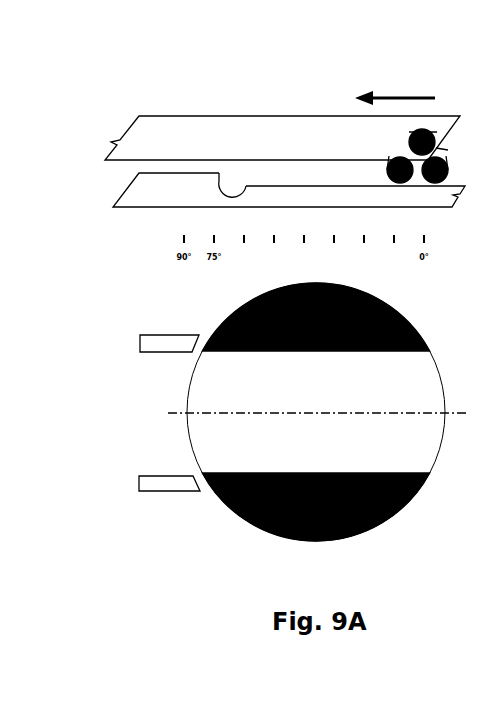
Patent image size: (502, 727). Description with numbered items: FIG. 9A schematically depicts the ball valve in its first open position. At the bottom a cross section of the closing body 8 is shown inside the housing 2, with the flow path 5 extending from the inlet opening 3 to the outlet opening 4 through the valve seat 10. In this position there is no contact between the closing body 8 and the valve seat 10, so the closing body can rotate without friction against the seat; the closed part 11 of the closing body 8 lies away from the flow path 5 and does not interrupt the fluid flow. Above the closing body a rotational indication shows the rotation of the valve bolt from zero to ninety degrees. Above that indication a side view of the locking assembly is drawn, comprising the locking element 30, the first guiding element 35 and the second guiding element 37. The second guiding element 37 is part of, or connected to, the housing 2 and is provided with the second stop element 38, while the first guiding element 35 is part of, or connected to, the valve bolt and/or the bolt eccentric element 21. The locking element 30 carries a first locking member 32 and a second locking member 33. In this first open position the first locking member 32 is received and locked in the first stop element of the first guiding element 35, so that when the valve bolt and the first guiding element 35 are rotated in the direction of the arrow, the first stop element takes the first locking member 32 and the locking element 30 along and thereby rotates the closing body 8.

The housing 2 is at (270, 149).
The bolt eccentric element 21 is at (282, 97).
The first guiding element 35 is at (169, 133).
The second guiding element 37 is at (155, 190).
The second stop element 38 is at (235, 188).
The locking element 30 is at (444, 112).
The first locking member 32 is at (425, 130).
The second locking member 33 is at (462, 170).
The inlet opening 3 is at (155, 433).
The outlet opening 4 is at (461, 441).
The flow path 5 is at (328, 414).
The closing body 8 is at (316, 428).
The valve seat 10 is at (157, 485).
The closed part 11 is at (262, 532).